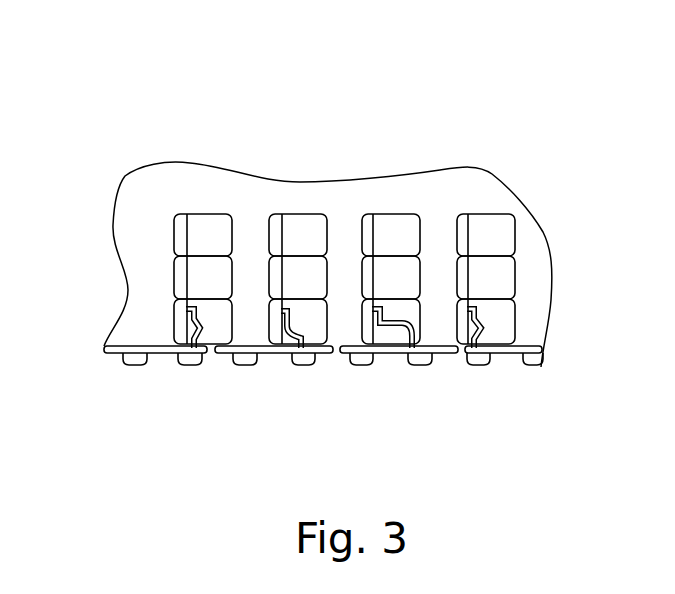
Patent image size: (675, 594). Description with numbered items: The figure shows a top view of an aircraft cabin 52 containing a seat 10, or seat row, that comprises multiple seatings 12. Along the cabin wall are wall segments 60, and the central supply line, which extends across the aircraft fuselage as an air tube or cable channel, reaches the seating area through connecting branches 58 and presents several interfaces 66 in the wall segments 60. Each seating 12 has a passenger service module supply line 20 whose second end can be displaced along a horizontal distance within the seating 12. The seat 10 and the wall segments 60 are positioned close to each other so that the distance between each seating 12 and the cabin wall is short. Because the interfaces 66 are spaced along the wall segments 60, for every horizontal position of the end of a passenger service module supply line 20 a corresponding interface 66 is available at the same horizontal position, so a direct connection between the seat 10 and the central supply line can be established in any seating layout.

The seat 10 is at (402, 274).
The seating 12 is at (500, 326).
The passenger service module supply line 20 is at (392, 327).
The aircraft cabin 52 is at (148, 142).
The connecting branch 58 is at (477, 360).
The wall segment 60 is at (342, 355).
The interface 66 is at (287, 355).